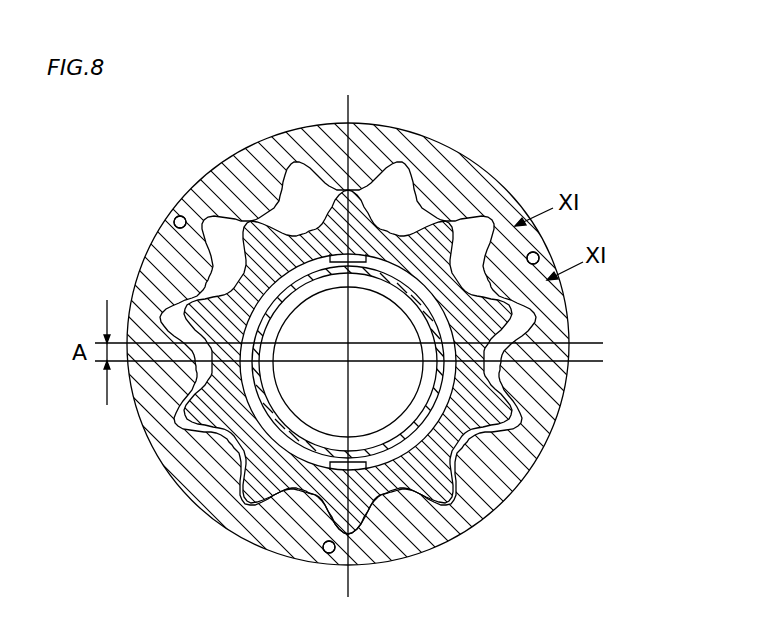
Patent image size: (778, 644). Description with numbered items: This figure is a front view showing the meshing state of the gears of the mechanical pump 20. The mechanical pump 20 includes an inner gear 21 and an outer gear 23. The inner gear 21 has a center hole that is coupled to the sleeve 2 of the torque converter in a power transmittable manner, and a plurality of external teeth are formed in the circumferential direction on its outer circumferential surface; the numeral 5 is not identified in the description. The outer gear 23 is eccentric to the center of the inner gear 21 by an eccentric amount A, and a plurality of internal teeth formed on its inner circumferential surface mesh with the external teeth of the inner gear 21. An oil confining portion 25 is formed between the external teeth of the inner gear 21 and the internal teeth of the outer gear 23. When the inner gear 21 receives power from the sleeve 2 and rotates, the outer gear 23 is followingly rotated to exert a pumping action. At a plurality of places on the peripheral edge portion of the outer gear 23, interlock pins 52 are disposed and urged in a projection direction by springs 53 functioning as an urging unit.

The sleeve 2 is at (523, 423).
The drive shaft 5 is at (277, 400).
The mechanical pump 20 is at (515, 190).
The inner gear 21 is at (497, 315).
The outer gear 23 is at (466, 167).
The oil confining portion 25 is at (392, 216).
The interlock pins 52 is at (170, 216).
The springs 53 is at (376, 385).